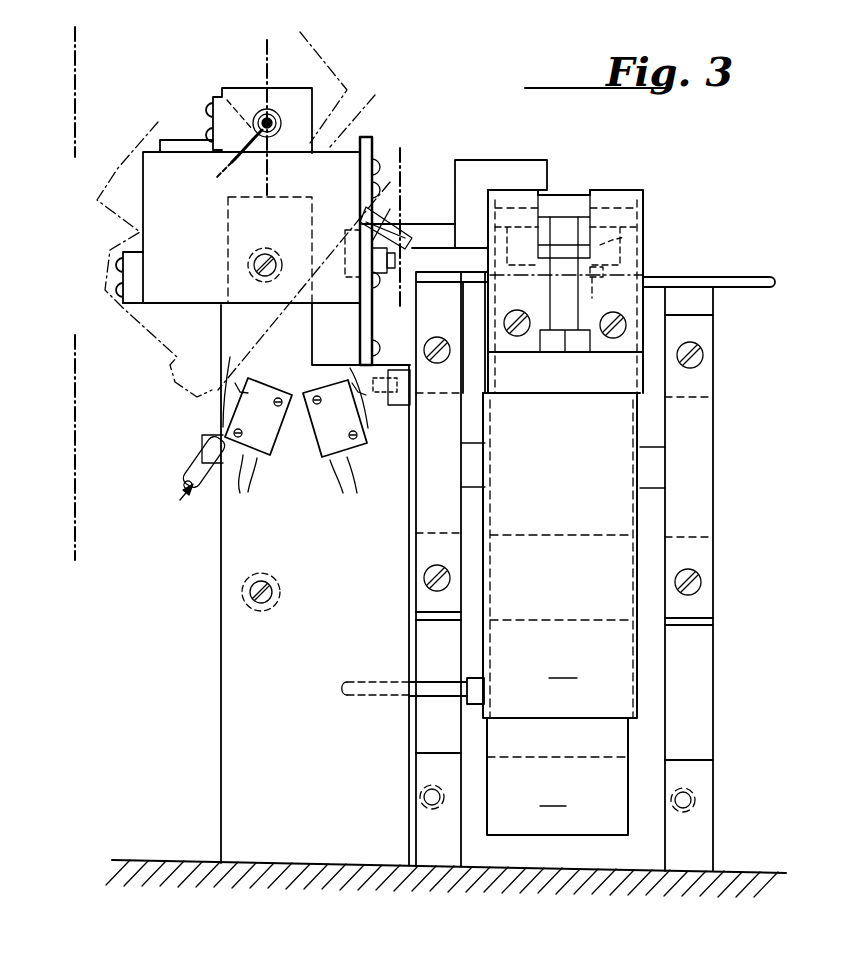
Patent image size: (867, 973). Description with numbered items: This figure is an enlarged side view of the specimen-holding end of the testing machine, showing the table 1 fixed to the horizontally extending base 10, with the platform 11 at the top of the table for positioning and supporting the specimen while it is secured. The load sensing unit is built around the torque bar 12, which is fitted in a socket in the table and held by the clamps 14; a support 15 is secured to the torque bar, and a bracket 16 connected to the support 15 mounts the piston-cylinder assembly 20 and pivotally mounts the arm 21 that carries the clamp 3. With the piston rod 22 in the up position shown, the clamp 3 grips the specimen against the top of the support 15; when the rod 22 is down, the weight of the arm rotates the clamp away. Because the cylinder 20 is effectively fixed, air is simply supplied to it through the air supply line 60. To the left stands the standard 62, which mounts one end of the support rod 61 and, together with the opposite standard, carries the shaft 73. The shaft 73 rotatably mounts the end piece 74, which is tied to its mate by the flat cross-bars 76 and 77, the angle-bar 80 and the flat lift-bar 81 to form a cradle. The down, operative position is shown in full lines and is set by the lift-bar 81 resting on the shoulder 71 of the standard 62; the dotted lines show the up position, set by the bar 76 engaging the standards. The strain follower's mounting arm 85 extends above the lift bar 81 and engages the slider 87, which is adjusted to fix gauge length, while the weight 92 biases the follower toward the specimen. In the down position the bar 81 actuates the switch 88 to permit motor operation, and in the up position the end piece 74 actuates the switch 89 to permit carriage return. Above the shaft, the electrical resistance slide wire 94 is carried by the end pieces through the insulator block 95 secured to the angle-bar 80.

The table 1 is at (722, 767).
The clamp 3 is at (566, 190).
The base 10 is at (743, 884).
The platform 11 is at (742, 284).
The torque bar 12 is at (601, 468).
The clamps 14 is at (430, 547).
The support 15 is at (557, 776).
The bracket 16 is at (617, 292).
The piston-cylinder assembly 20 is at (405, 400).
The arm 21 is at (576, 197).
The piston rod 22 is at (563, 292).
The air supply line 60 is at (197, 464).
The support rod 61 is at (242, 598).
The standard 62 is at (258, 660).
The shoulder 71 is at (330, 350).
The shaft 73 is at (248, 266).
The end piece 74 is at (143, 190).
The flat cross-bar 76 is at (123, 265).
The flat cross-bar 77 is at (368, 145).
The angle-bar 80 is at (214, 133).
The lift-bar 81 is at (362, 320).
The mounting arm 85 is at (437, 237).
The slider 87 is at (378, 240).
The switch 88 is at (330, 443).
The switch 89 is at (267, 440).
The weight 92 is at (481, 165).
The slide wire 94 is at (248, 143).
The insulator block 95 is at (297, 103).